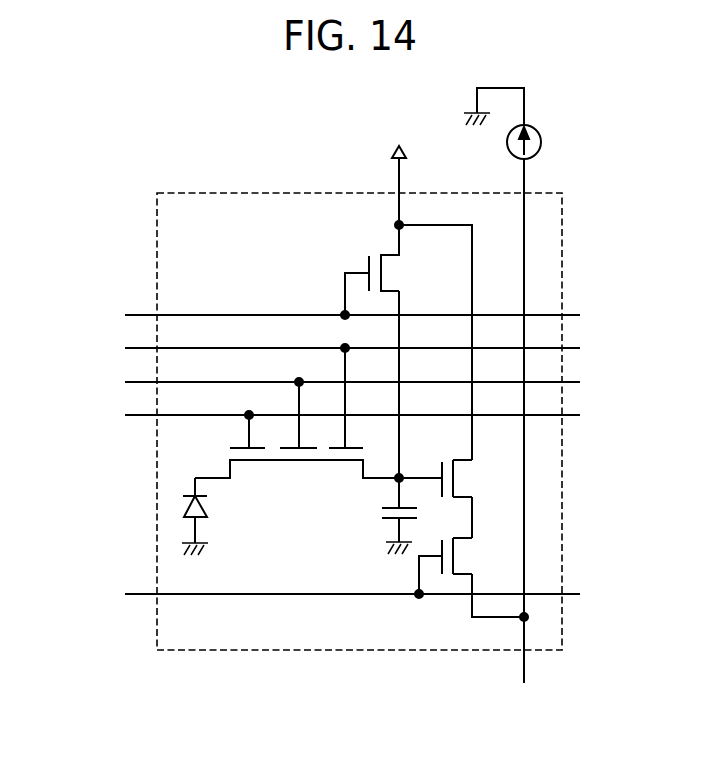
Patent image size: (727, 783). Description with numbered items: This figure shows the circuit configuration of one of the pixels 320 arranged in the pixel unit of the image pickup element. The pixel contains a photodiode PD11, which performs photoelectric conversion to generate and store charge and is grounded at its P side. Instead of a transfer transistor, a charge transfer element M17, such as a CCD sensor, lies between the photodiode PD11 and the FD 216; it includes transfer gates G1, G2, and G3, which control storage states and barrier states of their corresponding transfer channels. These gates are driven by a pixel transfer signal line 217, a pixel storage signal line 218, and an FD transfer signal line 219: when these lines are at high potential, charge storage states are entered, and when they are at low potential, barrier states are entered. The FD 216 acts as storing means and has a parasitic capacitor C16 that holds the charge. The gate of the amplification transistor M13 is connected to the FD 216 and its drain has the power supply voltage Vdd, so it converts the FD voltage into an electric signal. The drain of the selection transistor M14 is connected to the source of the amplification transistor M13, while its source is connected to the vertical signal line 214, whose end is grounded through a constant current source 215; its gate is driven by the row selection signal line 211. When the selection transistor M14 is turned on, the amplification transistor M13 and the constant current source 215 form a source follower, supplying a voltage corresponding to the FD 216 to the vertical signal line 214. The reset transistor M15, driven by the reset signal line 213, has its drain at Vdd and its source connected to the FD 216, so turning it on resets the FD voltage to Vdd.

The pixel 320 is at (292, 193).
The constant current source 215 is at (507, 147).
The vertical signal line 214 is at (526, 673).
The reset signal line 213 is at (137, 313).
The FD transfer signal line 219 is at (137, 346).
The pixel storage signal line 218 is at (137, 380).
The pixel transfer signal line 217 is at (137, 413).
The row selection signal line 211 is at (139, 592).
The FD 216 is at (401, 474).
The reset transistor M15 is at (354, 270).
The charge transfer element M17 is at (318, 477).
The amplification transistor M13 is at (478, 478).
The selection transistor M14 is at (466, 566).
The parasitic capacitor C16 is at (372, 527).
The photodiode PD11 is at (225, 516).
The transfer gate G1 is at (238, 431).
The transfer gate G2 is at (289, 415).
The transfer gate G3 is at (336, 398).
The power supply voltage Vdd is at (396, 172).